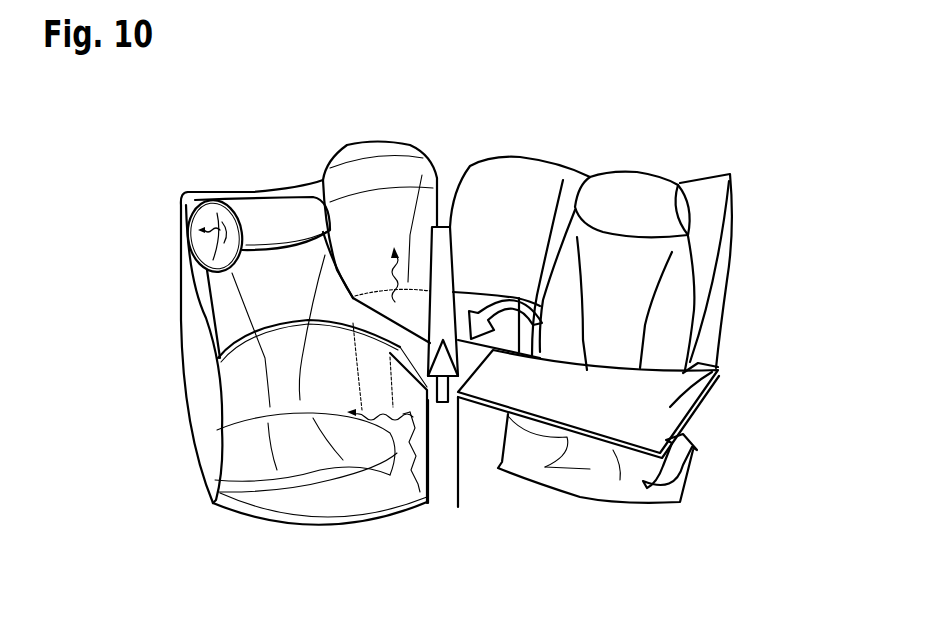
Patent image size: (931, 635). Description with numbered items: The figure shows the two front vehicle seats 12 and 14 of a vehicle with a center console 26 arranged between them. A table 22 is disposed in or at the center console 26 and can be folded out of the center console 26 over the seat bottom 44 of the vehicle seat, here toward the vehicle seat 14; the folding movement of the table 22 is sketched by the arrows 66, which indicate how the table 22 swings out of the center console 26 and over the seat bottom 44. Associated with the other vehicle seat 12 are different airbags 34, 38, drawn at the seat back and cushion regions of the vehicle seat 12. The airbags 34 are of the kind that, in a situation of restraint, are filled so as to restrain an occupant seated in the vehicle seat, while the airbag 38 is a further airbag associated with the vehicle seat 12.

The vehicle seat 12 is at (285, 213).
The vehicle seat 14 is at (637, 187).
The table 22 is at (483, 168).
The center console 26 is at (447, 480).
The airbag 34 is at (389, 165).
The airbag 38 is at (203, 217).
The seat bottom 44 is at (580, 452).
The arrows 66 is at (566, 175).